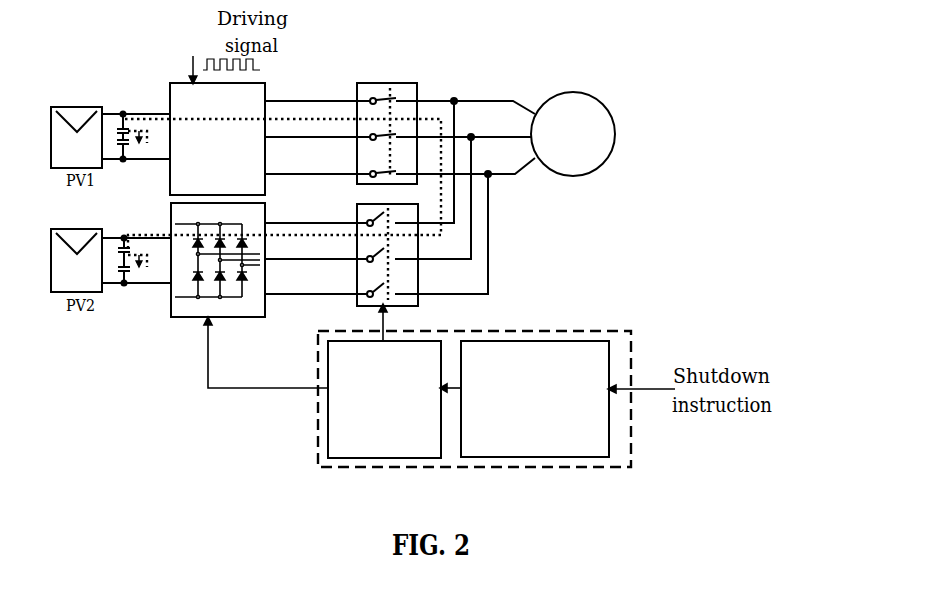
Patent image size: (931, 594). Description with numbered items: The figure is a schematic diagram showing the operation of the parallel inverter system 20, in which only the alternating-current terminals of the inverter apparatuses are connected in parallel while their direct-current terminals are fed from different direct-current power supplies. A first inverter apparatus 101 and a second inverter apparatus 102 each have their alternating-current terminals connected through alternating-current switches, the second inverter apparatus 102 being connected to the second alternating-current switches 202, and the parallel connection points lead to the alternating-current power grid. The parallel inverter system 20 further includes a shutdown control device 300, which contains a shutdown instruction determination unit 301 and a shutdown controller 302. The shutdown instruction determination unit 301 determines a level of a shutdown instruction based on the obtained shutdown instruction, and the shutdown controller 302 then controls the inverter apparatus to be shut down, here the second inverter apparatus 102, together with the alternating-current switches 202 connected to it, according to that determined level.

The parallel inverter system 20 is at (340, 48).
The first inverter apparatus 101 is at (265, 90).
The second inverter apparatus 102 is at (265, 217).
The second alternating-current switches 202 is at (421, 290).
The shutdown control device 300 is at (542, 348).
The shutdown instruction determination unit 301 is at (530, 463).
The shutdown controller 302 is at (377, 463).